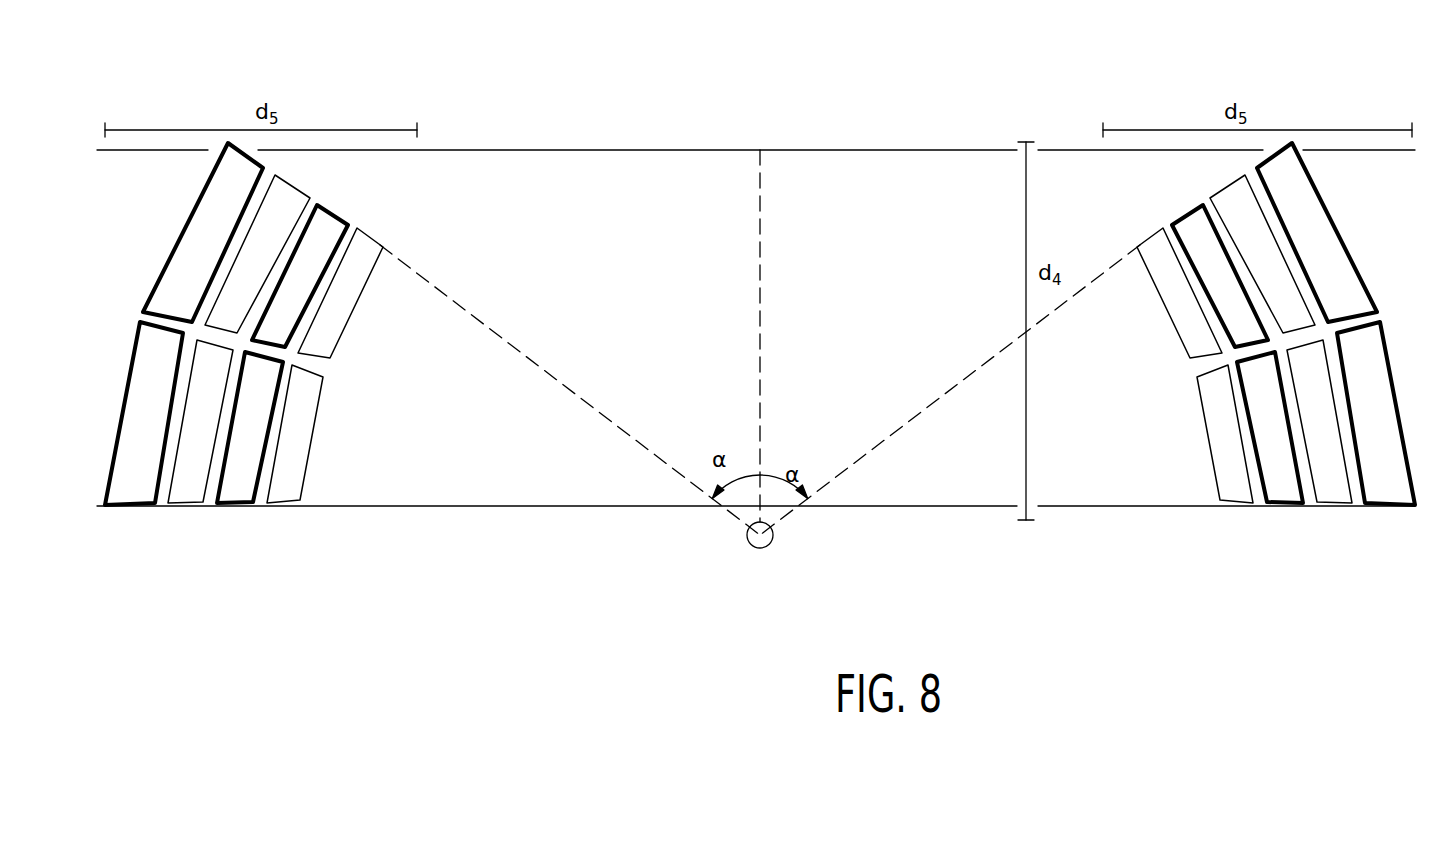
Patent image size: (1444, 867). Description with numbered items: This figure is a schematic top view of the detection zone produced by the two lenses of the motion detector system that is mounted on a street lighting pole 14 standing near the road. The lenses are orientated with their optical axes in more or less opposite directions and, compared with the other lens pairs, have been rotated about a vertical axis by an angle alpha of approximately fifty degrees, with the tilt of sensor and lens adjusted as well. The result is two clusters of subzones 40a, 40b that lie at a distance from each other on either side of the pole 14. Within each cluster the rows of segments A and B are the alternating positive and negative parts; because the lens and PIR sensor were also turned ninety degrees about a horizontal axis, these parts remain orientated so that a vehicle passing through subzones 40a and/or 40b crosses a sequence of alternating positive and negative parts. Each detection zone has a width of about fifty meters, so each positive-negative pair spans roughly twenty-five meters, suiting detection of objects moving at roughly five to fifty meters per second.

The pole 14 is at (757, 541).
The cluster of subzones 40a is at (546, 164).
The cluster of subzones 40b is at (1114, 166).
The outer row of segments A is at (372, 337).
The inner row of segments B is at (340, 453).